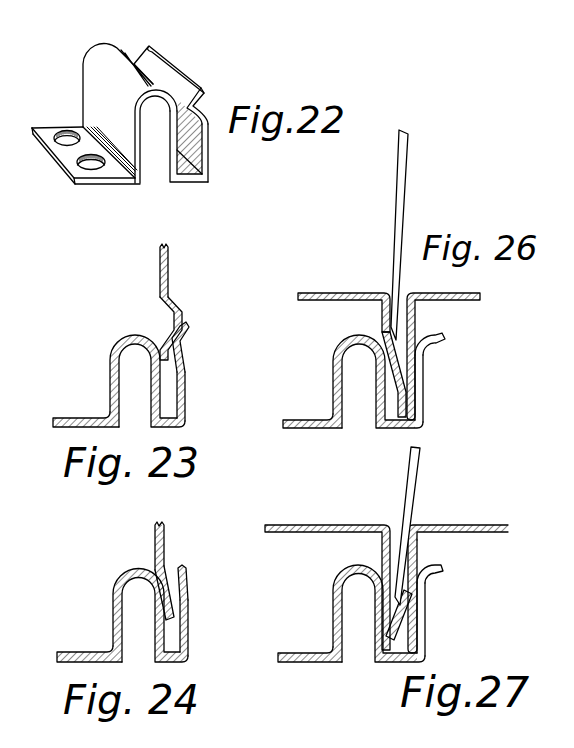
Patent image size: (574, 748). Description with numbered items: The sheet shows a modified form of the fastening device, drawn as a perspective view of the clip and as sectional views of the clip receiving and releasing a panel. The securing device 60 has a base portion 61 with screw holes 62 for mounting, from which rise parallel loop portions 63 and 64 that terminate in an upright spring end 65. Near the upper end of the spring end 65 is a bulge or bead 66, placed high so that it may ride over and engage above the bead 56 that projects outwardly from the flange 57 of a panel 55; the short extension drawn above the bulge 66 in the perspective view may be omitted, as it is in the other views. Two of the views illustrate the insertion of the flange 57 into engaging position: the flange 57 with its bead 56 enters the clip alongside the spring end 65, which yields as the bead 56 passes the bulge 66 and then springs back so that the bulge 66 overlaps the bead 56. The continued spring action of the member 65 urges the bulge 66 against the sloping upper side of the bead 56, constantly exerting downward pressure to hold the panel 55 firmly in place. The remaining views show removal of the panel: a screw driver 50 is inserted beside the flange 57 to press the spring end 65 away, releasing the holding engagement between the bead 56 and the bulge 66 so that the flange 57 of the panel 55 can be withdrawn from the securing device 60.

In FIG. 26, the screw driver 50 is at (408, 186).
In FIG. 27, the screw driver 50 is at (416, 479).
In FIG. 26, the panel 55 is at (327, 293).
In FIG. 27, the panel 55 is at (325, 525).
In FIG. 23, the bead 56 is at (176, 311).
In FIG. 24, the bead 56 is at (172, 566).
In FIG. 26, the bead 56 is at (388, 394).
In FIG. 27, the bead 56 is at (393, 621).
In FIG. 23, the flange 57 is at (159, 272).
In FIG. 24, the flange 57 is at (155, 535).
In FIG. 27, the flange 57 is at (418, 557).
In FIG. 22, the securing device 60 is at (77, 54).
In FIG. 22, the base portion 61 is at (65, 153).
In FIG. 23, the base portion 61 is at (88, 417).
In FIG. 24, the base portion 61 is at (90, 652).
In FIG. 26, the base portion 61 is at (315, 420).
In FIG. 22, the screw holes 62 is at (97, 170).
In FIG. 22, the loop portion 63 is at (130, 113).
In FIG. 22, the loop portion 64 is at (175, 163).
In FIG. 22, the upright spring end 65 is at (208, 173).
In FIG. 23, the upright spring end 65 is at (186, 388).
In FIG. 24, the upright spring end 65 is at (188, 637).
In FIG. 26, the upright spring end 65 is at (414, 407).
In FIG. 22, the bulge 66 is at (203, 107).
In FIG. 23, the bulge 66 is at (184, 352).
In FIG. 24, the bulge 66 is at (184, 577).
In FIG. 26, the bulge 66 is at (414, 338).
In FIG. 27, the bulge 66 is at (398, 597).